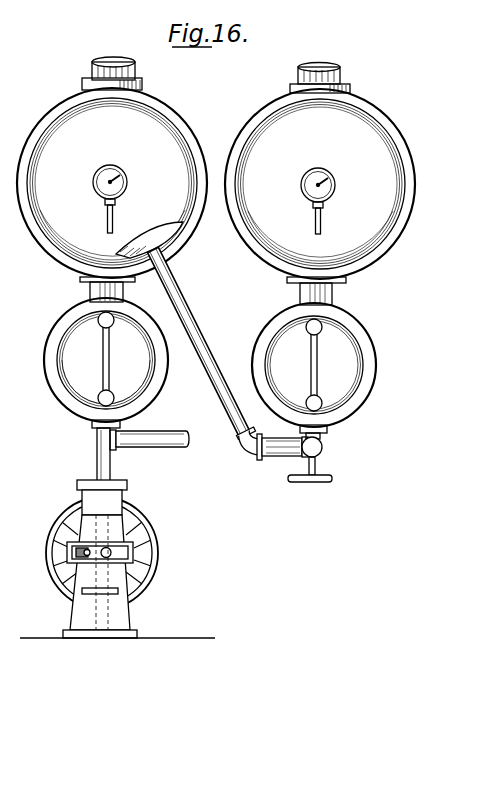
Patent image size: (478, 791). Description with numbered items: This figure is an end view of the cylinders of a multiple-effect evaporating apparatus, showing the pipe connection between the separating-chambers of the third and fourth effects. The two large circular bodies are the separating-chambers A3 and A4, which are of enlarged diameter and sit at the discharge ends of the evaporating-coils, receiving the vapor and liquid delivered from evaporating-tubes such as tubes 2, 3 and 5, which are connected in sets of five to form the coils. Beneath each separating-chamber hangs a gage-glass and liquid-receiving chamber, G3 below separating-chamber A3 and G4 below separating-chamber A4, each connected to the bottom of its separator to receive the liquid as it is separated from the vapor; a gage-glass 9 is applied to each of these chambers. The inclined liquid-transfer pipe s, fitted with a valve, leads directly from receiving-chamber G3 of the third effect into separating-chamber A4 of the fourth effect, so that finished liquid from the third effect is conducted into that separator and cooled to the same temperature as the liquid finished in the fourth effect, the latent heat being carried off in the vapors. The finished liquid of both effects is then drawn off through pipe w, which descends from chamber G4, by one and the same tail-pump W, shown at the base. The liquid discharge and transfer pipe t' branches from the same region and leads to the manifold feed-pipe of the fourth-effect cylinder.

The separating-chamber A4 is at (112, 179).
The separating-chamber A3 is at (320, 184).
The evaporating-tube 3 is at (149, 247).
The liquid-transfer pipe s is at (202, 343).
The float rod with balls 9 is at (202, 361).
The gage-glass and liquid-receiving chamber G4 is at (106, 363).
The gage-glass and liquid-receiving chamber G3 is at (314, 368).
The evaporating-tube 5 is at (314, 365).
The liquid discharge and transfer pipe t' is at (149, 431).
The pipe w is at (110, 455).
The tail-pump W is at (70, 489).
The evaporating-tube 2 is at (285, 456).